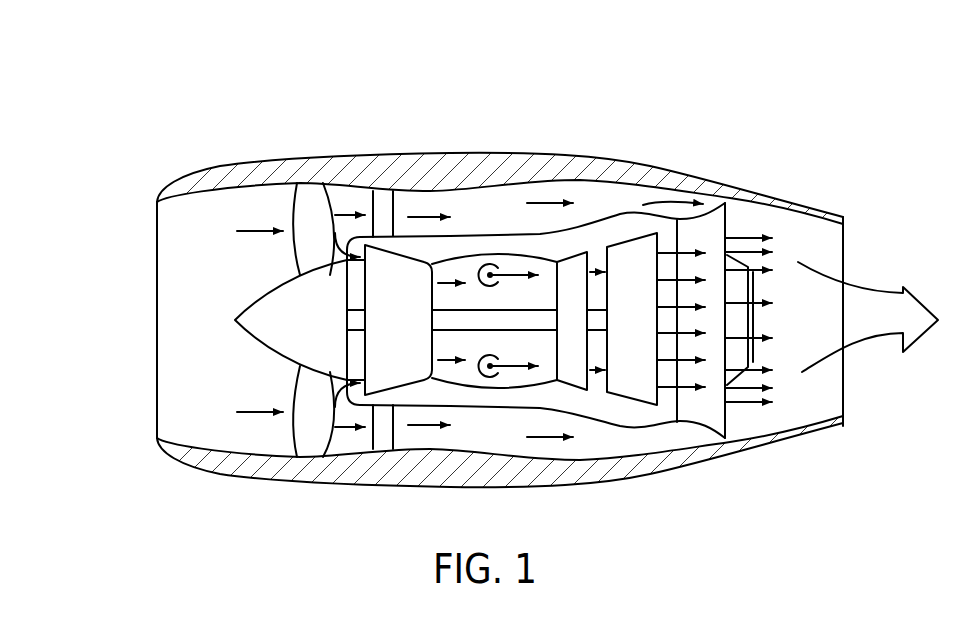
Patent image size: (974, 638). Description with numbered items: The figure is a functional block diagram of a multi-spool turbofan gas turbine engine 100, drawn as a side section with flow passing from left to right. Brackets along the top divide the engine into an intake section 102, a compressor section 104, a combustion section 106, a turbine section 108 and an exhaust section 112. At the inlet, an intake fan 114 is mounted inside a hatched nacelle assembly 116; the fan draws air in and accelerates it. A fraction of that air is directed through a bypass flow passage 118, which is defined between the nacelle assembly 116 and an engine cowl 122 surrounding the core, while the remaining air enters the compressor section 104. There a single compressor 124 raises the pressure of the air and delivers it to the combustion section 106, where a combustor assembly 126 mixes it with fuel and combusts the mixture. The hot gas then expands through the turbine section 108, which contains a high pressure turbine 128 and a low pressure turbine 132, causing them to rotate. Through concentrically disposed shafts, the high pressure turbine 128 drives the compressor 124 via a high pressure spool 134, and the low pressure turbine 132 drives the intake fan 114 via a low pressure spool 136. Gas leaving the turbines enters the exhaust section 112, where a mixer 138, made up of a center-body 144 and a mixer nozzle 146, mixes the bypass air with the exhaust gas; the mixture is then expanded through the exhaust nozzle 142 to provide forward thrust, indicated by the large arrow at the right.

The turbofan gas turbine engine 100 is at (854, 66).
The intake section 102 is at (337, 115).
The compressor section 104 is at (433, 115).
The combustion section 106 is at (557, 115).
The turbine section 108 is at (657, 115).
The exhaust section 112 is at (842, 115).
The intake fan 114 is at (327, 331).
The nacelle assembly 116 is at (305, 483).
The bypass flow passage 118 is at (498, 197).
The engine cowl 122 is at (500, 407).
The compressor 124 is at (418, 331).
The combustor assembly 126 is at (492, 265).
The high pressure turbine 128 is at (573, 263).
The low pressure turbine 132 is at (652, 331).
The high pressure spool 134 is at (477, 323).
The low pressure spool 136 is at (350, 322).
The mixer 138 is at (742, 357).
The exhaust nozzle 142 is at (843, 247).
The center-body 144 is at (735, 287).
The mixer nozzle 146 is at (707, 417).